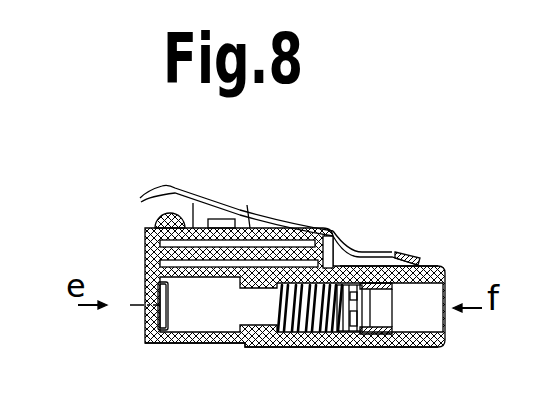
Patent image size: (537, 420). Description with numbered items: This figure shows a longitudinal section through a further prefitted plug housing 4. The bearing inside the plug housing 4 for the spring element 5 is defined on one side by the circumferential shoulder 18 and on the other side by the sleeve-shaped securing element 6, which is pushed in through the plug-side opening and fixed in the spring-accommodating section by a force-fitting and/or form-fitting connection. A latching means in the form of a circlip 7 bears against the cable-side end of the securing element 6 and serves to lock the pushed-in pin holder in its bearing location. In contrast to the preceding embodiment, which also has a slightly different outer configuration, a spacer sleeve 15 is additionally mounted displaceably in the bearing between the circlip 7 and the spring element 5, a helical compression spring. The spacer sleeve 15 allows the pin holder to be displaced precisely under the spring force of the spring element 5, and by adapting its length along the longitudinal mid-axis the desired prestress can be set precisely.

The plug housing 4 is at (143, 248).
The spring element 5 is at (323, 268).
The securing element 6 is at (381, 336).
The circlip 7 is at (363, 275).
The spacer sleeve 15 is at (337, 331).
The shoulder 18 is at (259, 343).